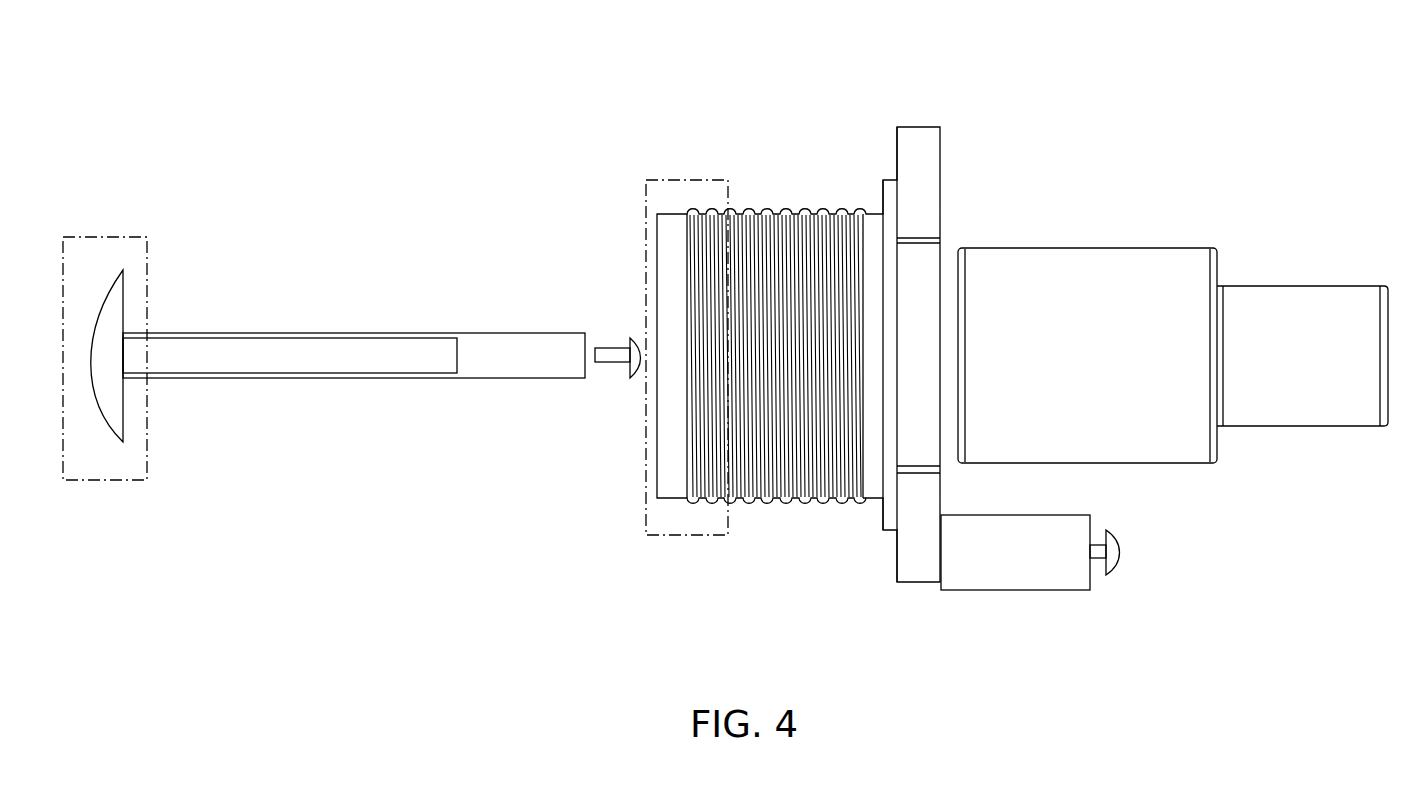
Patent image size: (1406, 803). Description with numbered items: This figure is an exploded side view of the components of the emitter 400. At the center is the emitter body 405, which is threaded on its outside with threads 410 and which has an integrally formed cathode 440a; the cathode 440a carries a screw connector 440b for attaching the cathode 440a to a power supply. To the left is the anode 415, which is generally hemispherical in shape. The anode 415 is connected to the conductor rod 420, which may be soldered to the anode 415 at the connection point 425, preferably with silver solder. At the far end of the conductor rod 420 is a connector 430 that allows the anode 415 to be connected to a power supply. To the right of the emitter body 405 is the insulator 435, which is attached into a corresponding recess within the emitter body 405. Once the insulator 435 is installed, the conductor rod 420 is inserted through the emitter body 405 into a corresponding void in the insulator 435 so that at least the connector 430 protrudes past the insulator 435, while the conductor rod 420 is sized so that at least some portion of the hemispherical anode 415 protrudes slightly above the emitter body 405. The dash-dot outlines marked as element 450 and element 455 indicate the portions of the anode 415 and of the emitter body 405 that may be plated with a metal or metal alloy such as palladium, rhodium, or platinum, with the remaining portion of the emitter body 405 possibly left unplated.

The emitter 400 is at (277, 55).
The emitter body 405 is at (678, 212).
The threads 410 is at (772, 208).
The anode 415 is at (102, 288).
The conductor rod 420 is at (228, 335).
The connection point 425 is at (100, 365).
The connector 430 is at (633, 355).
The insulator 435 is at (1085, 248).
The cathode 440a is at (1037, 590).
The screw connector 440b is at (1120, 555).
The plated portion of anode 450 is at (140, 482).
The plated portion of emitter body 455 is at (663, 538).